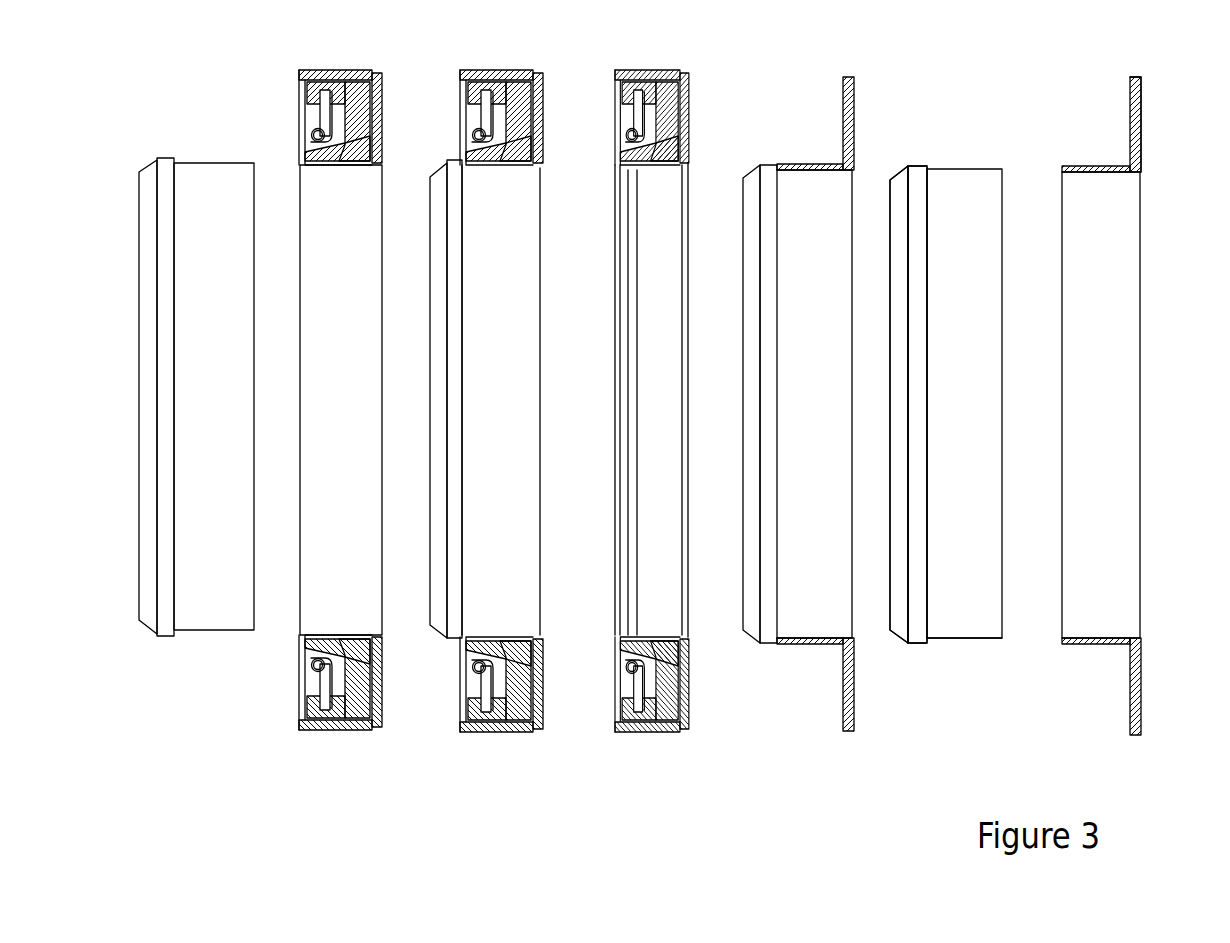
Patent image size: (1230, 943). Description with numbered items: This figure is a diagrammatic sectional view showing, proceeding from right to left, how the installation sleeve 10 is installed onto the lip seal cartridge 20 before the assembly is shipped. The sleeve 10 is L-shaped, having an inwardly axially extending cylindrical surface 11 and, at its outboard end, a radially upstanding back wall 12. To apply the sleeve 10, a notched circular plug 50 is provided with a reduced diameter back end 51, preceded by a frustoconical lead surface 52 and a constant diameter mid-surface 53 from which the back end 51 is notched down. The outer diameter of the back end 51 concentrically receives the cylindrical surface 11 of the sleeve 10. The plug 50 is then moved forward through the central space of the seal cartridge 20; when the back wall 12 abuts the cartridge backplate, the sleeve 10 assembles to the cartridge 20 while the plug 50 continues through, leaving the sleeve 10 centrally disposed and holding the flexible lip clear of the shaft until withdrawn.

The installation sleeve 10 is at (390, 90).
The cylindrical surface 11 is at (1103, 172).
The back wall 12 is at (1141, 125).
The lip seal cartridge 20 is at (293, 120).
The circular plug 50 is at (232, 416).
The reduced diameter back end 51 is at (972, 643).
The frustoconical lead surface 52 is at (897, 175).
The constant diameter mid-surface 53 is at (920, 167).